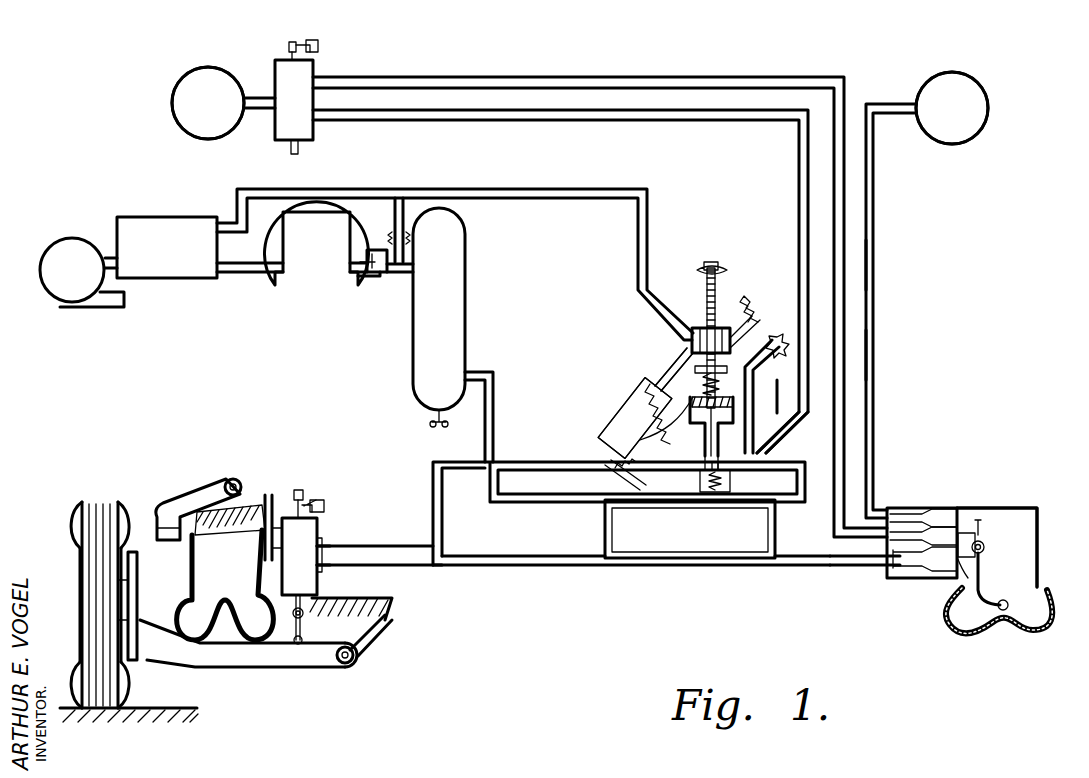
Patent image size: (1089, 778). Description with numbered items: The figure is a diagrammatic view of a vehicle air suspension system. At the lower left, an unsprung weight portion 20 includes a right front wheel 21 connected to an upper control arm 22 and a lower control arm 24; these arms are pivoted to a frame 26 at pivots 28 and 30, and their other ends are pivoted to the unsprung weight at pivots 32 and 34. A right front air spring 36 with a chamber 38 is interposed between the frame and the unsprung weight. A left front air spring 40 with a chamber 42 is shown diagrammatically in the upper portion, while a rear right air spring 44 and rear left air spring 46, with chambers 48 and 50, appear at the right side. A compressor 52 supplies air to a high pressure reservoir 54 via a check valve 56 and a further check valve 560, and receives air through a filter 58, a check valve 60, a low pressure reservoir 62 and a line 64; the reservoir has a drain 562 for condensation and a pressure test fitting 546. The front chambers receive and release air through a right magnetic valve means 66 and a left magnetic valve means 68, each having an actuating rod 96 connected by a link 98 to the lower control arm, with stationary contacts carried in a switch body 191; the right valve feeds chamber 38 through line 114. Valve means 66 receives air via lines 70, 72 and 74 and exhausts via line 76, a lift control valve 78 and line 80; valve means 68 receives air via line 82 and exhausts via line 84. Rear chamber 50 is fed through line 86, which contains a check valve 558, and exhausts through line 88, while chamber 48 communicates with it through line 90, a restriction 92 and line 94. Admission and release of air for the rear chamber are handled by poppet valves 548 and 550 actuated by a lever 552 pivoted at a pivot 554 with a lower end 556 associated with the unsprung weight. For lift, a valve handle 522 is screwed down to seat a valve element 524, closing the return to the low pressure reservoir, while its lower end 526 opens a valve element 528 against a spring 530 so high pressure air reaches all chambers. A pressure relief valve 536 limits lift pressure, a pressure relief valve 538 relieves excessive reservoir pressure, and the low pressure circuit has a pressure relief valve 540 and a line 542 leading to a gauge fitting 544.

The unsprung weight portion 20 is at (76, 500).
The right front wheel 21 is at (72, 520).
The upper control arm 22 is at (175, 490).
The lower control arm 24 is at (240, 672).
The frame 26 is at (266, 495).
The pivot 28 is at (228, 478).
The pivot 30 is at (368, 632).
The pivot 32 is at (146, 552).
The pivot 34 is at (137, 712).
The right front air spring 36 is at (262, 650).
The chamber 38 is at (206, 602).
The left front air spring 40 is at (205, 70).
The chamber 42 is at (190, 108).
The rear right air spring 44 is at (1036, 508).
The rear left air spring 46 is at (960, 72).
The chamber 48 is at (938, 115).
The chamber 50 is at (990, 522).
The compressor 52 is at (285, 342).
The high pressure reservoir 54 is at (452, 246).
The check valve 56 is at (376, 255).
The filter 58 is at (68, 304).
The check valve 60 is at (110, 252).
The low pressure reservoir 62 is at (134, 222).
The line 64 is at (250, 275).
The right magnetic valve means 66 is at (320, 522).
The left magnetic valve means 68 is at (318, 72).
The line 70 is at (486, 378).
The line 72 is at (600, 535).
The line 74 is at (400, 544).
The line 76 is at (510, 462).
The lift control valve 78 is at (728, 322).
The line 80 is at (586, 186).
The line 82 is at (512, 72).
The line 84 is at (630, 112).
The line 86 is at (700, 568).
The line 88 is at (828, 568).
The line 90 is at (875, 352).
The restriction 92 is at (875, 262).
The line 94 is at (870, 200).
The actuating rod 96 is at (335, 668).
The link 98 is at (296, 640).
The line 114 is at (304, 590).
The switch body 191 is at (322, 498).
The valve handle 522 is at (700, 268).
The valve element 524 is at (668, 355).
The lower end 526 is at (652, 392).
The valve element 528 is at (740, 482).
The spring 530 is at (712, 498).
The pressure relief valve 536 is at (600, 442).
The pressure relief valve 538 is at (600, 480).
The pressure relief valve 540 is at (764, 310).
The line 542 is at (784, 418).
The fitting 544 is at (790, 340).
The pressure test fitting 546 is at (404, 225).
The poppet valve 548 is at (955, 572).
The poppet valve 550 is at (970, 535).
The lever 552 is at (964, 625).
The pivot 554 is at (1010, 615).
The lower end 556 is at (1002, 612).
The check valve 558 is at (905, 575).
The check valve 560 is at (388, 282).
The drain 562 is at (430, 428).